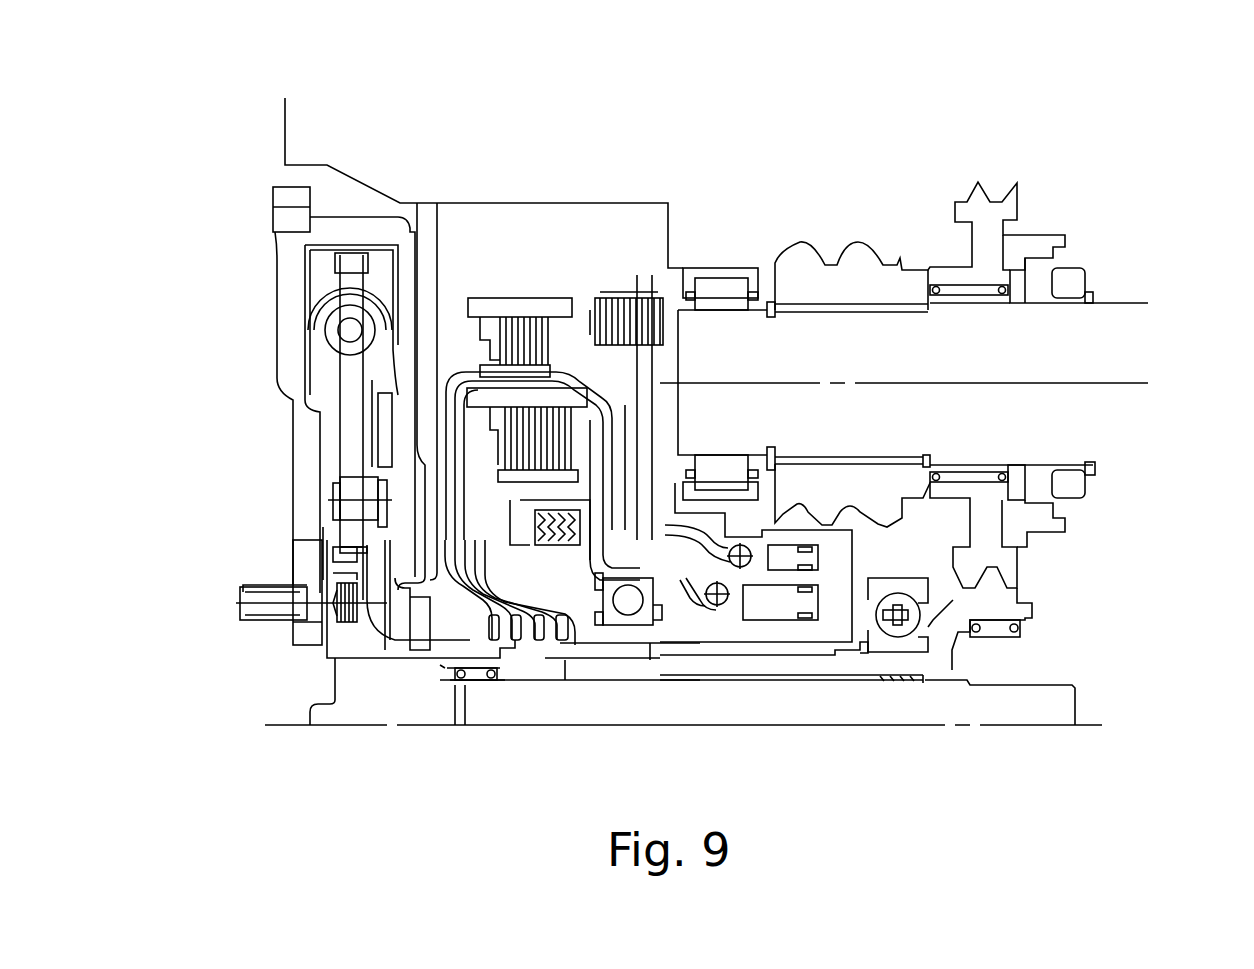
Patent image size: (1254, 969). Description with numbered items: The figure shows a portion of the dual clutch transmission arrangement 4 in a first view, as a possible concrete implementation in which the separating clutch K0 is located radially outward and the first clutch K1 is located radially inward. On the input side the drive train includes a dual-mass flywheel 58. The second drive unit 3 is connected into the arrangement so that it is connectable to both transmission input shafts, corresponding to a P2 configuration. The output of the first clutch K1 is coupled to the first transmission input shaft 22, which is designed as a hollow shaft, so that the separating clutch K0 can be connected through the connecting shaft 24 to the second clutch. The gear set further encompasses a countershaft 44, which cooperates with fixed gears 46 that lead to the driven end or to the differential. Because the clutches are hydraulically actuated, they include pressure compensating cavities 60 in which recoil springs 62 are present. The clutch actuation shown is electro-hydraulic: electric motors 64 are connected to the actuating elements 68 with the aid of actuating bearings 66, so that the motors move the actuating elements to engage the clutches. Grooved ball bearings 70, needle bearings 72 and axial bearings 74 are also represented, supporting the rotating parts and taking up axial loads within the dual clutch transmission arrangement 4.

The dual clutch transmission arrangement 4 is at (198, 98).
The dual-mass flywheel 58 is at (236, 284).
The separating clutch K0 is at (488, 345).
The first clutch K1 is at (486, 437).
The actuating elements 68 is at (500, 498).
The pressure compensating cavity 60 is at (500, 527).
The recoil spring 62 is at (607, 443).
The second drive unit 3 is at (612, 298).
The fixed gears 46 is at (858, 265).
The countershaft 44 is at (1020, 347).
The first transmission input shaft 22 is at (928, 666).
The connecting shaft 24 is at (1025, 712).
The grooved ball bearings 70 is at (630, 600).
The actuating bearings 66 is at (716, 606).
The electric motors 64 is at (770, 570).
The needle bearings 72 is at (470, 682).
The axial bearings 74 is at (495, 640).